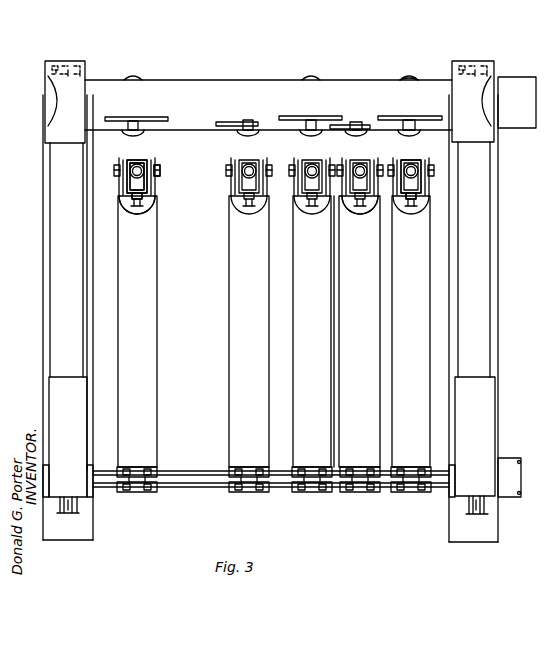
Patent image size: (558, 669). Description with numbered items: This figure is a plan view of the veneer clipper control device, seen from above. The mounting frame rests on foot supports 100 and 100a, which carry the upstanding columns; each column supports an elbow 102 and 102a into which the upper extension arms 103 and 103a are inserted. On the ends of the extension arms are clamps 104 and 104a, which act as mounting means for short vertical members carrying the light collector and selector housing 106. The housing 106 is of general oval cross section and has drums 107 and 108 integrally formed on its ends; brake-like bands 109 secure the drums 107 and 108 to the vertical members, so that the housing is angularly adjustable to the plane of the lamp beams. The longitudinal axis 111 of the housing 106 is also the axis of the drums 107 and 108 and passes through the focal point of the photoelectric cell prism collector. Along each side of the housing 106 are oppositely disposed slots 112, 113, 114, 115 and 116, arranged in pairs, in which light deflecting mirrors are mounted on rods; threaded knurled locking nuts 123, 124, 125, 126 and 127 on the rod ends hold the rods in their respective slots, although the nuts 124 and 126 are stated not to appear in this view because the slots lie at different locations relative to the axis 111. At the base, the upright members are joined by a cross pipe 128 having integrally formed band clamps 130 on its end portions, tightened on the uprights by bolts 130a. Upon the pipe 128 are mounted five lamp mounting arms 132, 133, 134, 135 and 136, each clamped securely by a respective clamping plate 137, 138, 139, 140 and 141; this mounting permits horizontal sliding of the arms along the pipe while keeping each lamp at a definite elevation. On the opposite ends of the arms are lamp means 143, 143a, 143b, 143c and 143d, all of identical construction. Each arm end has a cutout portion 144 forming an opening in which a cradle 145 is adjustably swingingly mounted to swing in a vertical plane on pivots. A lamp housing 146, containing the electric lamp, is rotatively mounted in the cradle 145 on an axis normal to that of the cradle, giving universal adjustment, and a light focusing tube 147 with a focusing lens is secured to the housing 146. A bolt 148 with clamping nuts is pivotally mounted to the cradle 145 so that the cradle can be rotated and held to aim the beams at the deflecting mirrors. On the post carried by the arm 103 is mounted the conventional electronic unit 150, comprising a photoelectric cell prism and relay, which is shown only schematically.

The foot support 100 is at (492, 536).
The foot support 100a is at (70, 532).
The elbow 102 is at (492, 437).
The elbow 102a is at (48, 382).
The upper extension arm 103 is at (490, 350).
The upper extension arm 103a is at (60, 306).
The clamp 104 is at (478, 62).
The clamp 104a is at (55, 60).
The light collector and selector housing 106 is at (247, 84).
The drum 107 is at (480, 105).
The drum 108 is at (48, 88).
The brake-like band 109 is at (76, 62).
The longitudinal axis 111 is at (190, 96).
The slot 112 is at (428, 108).
The slot 113 is at (373, 125).
The slot 114 is at (340, 112).
The slot 115 is at (232, 122).
The slot 116 is at (113, 117).
The knurled locking nut 123 is at (409, 118).
The knurled locking nut 124 is at (357, 126).
The knurled locking nut 125 is at (303, 116).
The knurled locking nut 126 is at (258, 124).
The knurled locking nut 127 is at (143, 119).
The pipe 128 is at (206, 484).
The band clamp 130 is at (65, 509).
The bolt 130a is at (80, 506).
The lamp mounting arm 132 is at (424, 399).
The lamp mounting arm 133 is at (370, 399).
The lamp mounting arm 134 is at (325, 399).
The lamp mounting arm 135 is at (258, 399).
The lamp mounting arm 136 is at (150, 399).
The clamping plate 137 is at (414, 493).
The clamping plate 138 is at (362, 493).
The clamping plate 139 is at (315, 493).
The clamping plate 140 is at (252, 493).
The clamping plate 141 is at (143, 493).
The lamp means 143 is at (416, 159).
The lamp means 143a is at (364, 159).
The lamp means 143b is at (316, 159).
The lamp means 143c is at (255, 159).
The lamp means 143d is at (147, 159).
The cutout portion 144 is at (300, 196).
The cradle 145 is at (152, 208).
The lamp housing 146 is at (149, 192).
The light focusing tube 147 is at (146, 183).
The bolt 148 is at (161, 171).
The electronic unit 150 is at (528, 107).